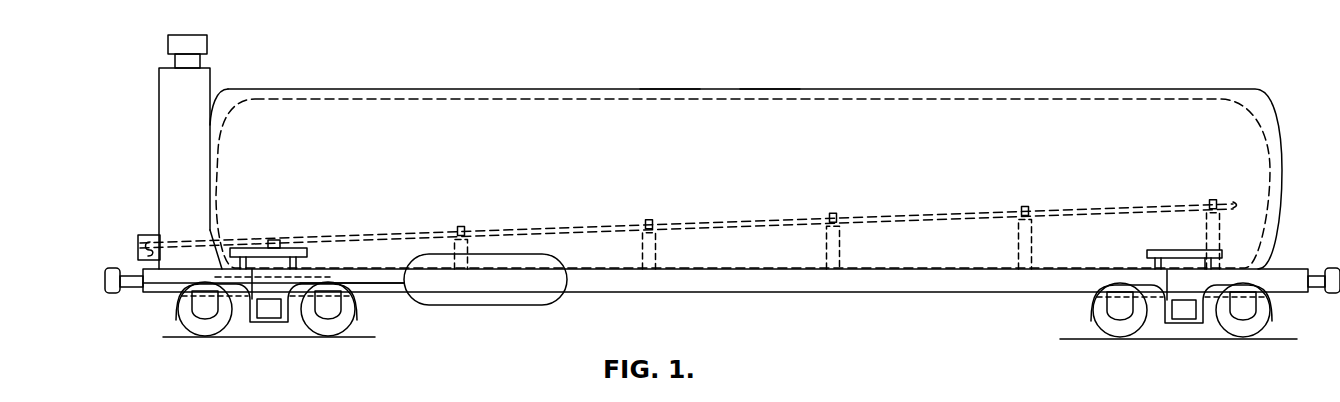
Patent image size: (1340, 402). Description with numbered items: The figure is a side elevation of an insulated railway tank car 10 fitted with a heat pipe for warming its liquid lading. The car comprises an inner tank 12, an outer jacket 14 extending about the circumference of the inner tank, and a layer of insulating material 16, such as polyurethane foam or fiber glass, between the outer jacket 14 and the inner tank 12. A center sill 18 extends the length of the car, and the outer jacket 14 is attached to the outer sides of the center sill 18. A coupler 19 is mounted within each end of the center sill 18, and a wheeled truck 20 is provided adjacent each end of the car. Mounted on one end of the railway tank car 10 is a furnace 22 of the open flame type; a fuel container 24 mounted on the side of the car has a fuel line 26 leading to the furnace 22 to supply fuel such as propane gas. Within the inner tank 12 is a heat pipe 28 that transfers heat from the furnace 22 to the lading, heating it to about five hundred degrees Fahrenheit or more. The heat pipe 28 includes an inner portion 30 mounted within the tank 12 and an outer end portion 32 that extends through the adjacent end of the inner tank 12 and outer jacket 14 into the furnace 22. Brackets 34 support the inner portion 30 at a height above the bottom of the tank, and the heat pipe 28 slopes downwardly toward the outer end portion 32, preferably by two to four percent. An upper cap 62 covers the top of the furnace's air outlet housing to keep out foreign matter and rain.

The railway tank car 10 is at (772, 88).
The inner tank 12 is at (903, 103).
The outer jacket 14 is at (1085, 90).
The layer of insulating material 16 is at (672, 98).
The center sill 18 is at (882, 292).
The coupler 19 is at (122, 298).
The wheeled truck 20 is at (272, 322).
The furnace 22 is at (212, 86).
The fuel container 24 is at (510, 300).
The fuel line 26 is at (386, 284).
The heat pipe 28 is at (500, 230).
The inner portion 30 is at (735, 223).
The outer end portion 32 is at (188, 242).
The brackets 34 is at (657, 246).
The upper cap 62 is at (209, 43).